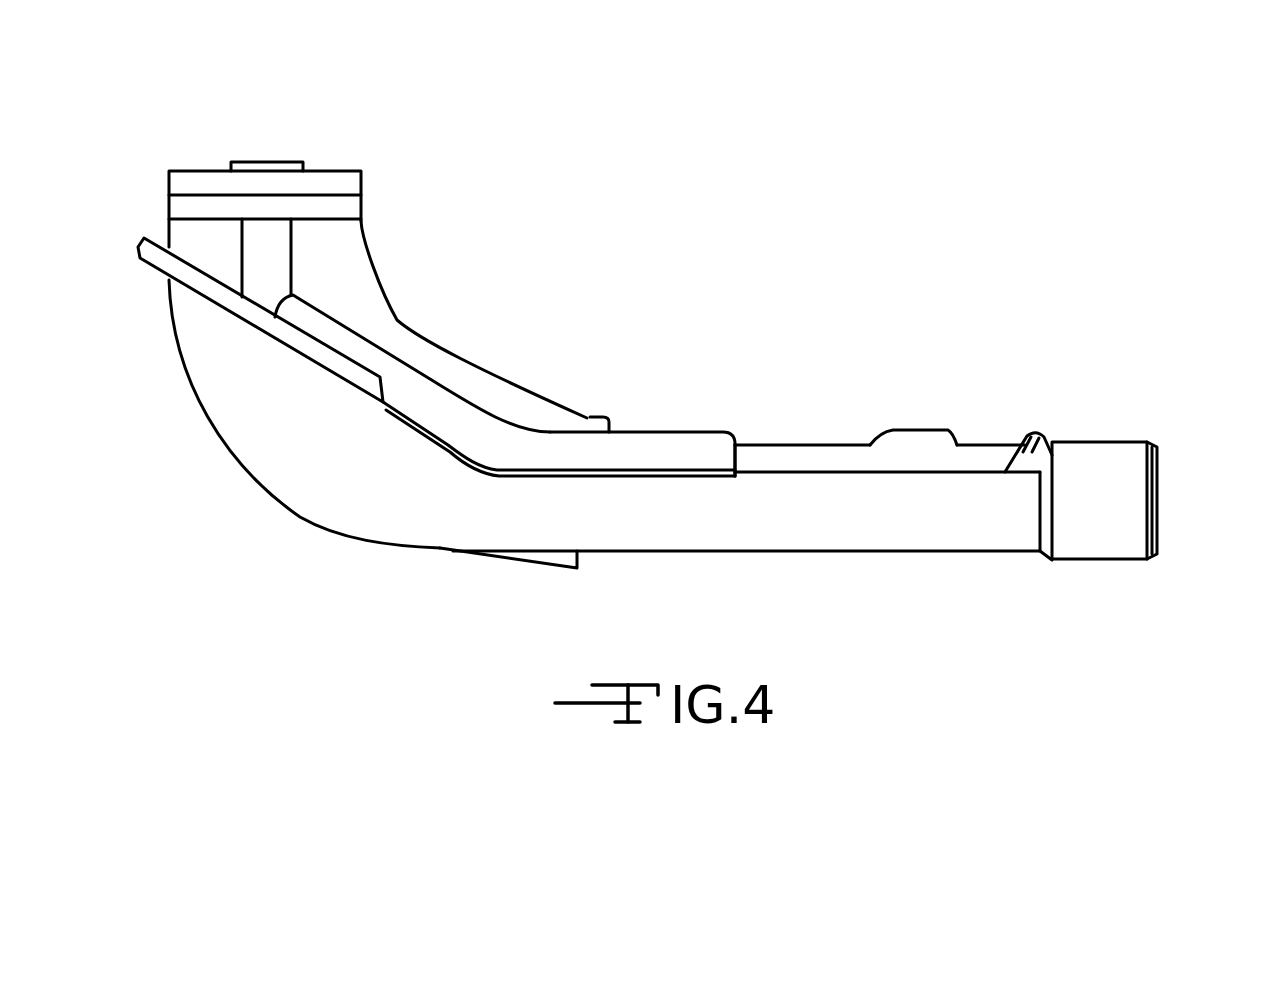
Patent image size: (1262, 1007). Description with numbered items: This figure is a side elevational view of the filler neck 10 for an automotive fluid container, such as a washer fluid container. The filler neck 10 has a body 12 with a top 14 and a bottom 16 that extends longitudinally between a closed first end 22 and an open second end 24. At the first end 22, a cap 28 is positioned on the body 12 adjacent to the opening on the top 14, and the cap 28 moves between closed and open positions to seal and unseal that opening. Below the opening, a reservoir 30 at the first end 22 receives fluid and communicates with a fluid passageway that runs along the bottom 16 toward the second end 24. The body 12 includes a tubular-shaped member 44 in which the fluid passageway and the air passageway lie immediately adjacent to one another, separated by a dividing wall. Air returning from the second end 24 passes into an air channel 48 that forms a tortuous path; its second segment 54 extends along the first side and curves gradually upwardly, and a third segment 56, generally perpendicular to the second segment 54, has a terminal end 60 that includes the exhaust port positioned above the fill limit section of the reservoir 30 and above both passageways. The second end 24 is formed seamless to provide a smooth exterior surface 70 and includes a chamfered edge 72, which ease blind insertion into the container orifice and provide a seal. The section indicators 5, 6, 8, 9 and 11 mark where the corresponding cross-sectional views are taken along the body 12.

The filler neck 10 is at (707, 306).
The body 12 is at (537, 390).
The top 14 is at (772, 443).
The bottom 16 is at (910, 553).
The first end 22 is at (177, 330).
The second end 24 is at (1120, 440).
The cap 28 is at (325, 168).
The reservoir 30 is at (248, 438).
The tubular-shaped member 44 is at (992, 443).
The air channel 48 is at (508, 440).
The second segment 54 is at (597, 455).
The third segment 56 is at (273, 285).
The terminal end 60 is at (248, 217).
The smooth exterior surface 70 is at (1077, 440).
The chamfered edge 72 is at (1152, 560).
The section line 5- 5 is at (1095, 418).
The section line 6- 6 is at (812, 432).
The section line 8- 8 is at (707, 408).
The section line 9- 9 is at (467, 373).
The section line 11- 11 is at (266, 142).